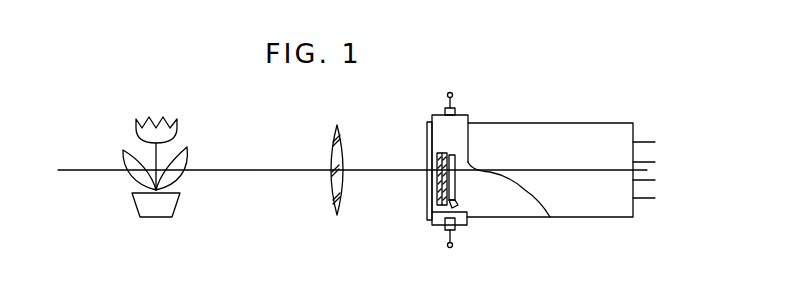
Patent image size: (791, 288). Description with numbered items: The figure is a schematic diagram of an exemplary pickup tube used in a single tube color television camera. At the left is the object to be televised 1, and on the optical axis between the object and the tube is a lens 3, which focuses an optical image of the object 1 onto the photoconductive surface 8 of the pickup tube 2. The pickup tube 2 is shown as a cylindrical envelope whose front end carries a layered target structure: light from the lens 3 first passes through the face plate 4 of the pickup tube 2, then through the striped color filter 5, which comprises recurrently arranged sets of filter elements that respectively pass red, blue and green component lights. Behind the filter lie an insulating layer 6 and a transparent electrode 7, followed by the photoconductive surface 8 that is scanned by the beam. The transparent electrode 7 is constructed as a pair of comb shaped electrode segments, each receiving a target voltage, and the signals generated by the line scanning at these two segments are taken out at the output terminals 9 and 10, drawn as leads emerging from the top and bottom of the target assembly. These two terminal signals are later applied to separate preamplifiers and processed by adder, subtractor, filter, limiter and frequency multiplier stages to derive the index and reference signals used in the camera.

The object to be televised 1 is at (147, 210).
The pickup tube 2 is at (546, 217).
The lens 3 is at (344, 184).
The face plate 4 is at (430, 206).
The striped color filter 5 is at (433, 225).
The insulating layer 6 is at (437, 175).
The transparent electrode 7 is at (460, 206).
The photoconductive surface 8 is at (457, 186).
The output terminal 9 is at (453, 93).
The output terminal 10 is at (453, 245).